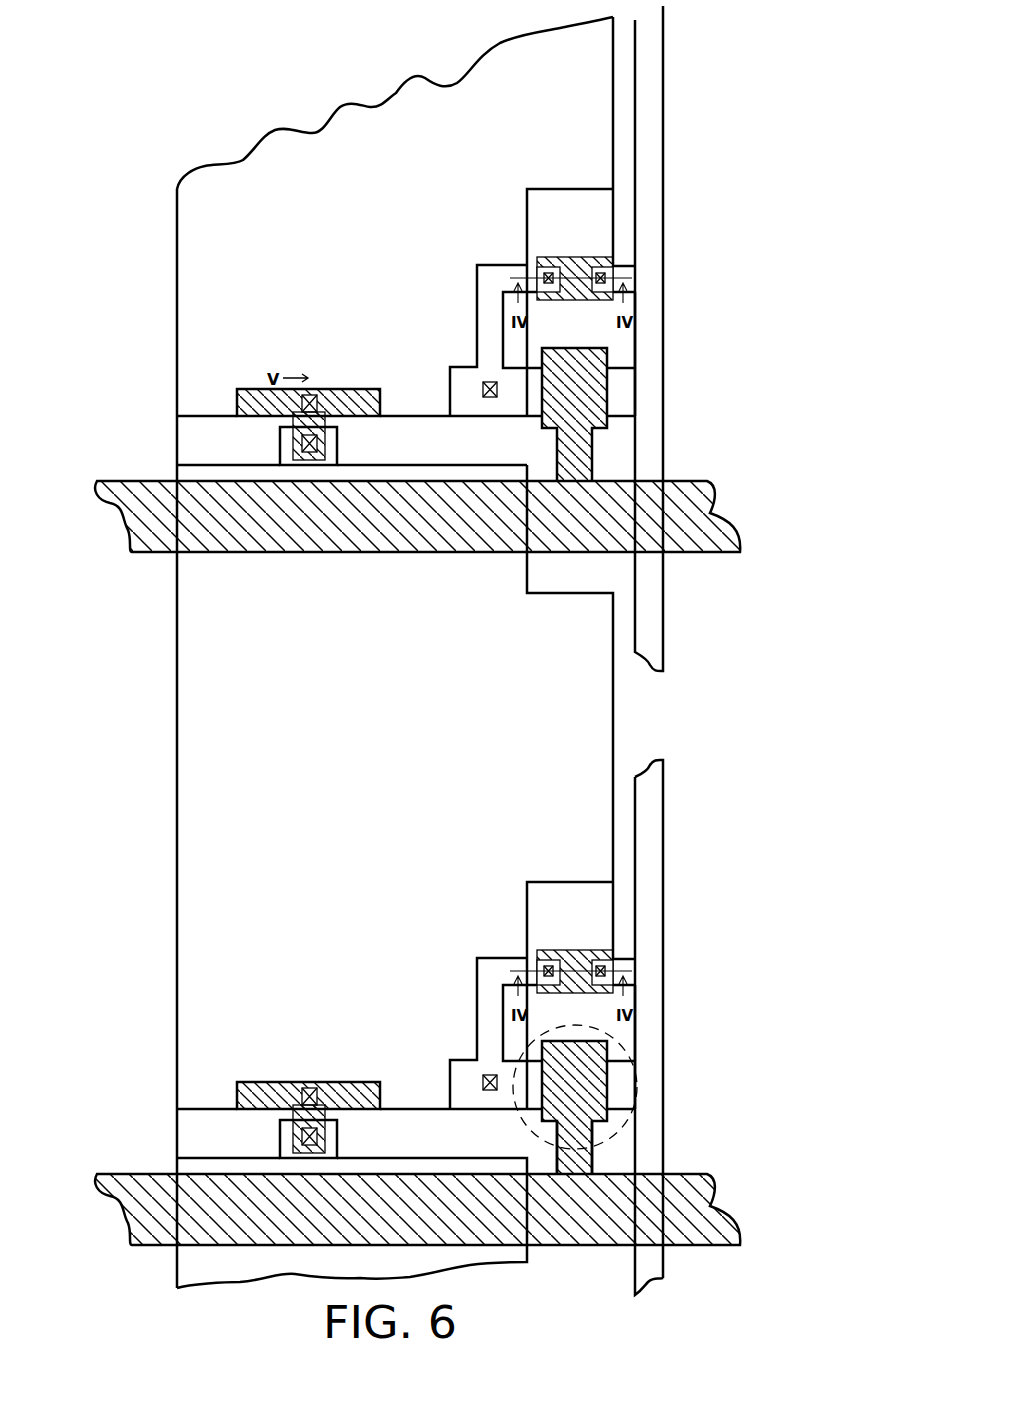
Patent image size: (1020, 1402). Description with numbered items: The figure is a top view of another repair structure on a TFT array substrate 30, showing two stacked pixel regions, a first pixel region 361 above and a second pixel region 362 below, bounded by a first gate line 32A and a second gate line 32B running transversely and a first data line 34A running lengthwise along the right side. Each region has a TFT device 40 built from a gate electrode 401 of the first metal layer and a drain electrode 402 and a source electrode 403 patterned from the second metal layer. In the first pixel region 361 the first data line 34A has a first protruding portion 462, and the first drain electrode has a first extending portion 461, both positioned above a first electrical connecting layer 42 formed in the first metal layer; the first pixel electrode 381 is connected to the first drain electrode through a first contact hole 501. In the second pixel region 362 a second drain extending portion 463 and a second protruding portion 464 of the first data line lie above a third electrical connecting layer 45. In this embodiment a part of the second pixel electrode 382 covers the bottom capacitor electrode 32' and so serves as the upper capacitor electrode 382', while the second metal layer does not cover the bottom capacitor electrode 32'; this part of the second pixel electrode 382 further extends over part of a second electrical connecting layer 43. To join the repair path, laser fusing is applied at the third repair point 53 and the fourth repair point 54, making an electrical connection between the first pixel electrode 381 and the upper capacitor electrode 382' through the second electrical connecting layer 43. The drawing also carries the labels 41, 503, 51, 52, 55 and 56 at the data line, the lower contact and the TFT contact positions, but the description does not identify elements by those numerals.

The TFT array substrate 30 is at (167, 160).
The bottom capacitor electrode 32' is at (138, 474).
The first gate line 32A is at (700, 520).
The second gate line 32B is at (700, 1213).
The first data line 34A is at (647, 1263).
The first pixel region 361 is at (565, 100).
The second pixel region 362 is at (565, 632).
The first pixel electrode 381 is at (395, 194).
The second pixel electrode 382 is at (406, 920).
The upper capacitor electrode 382' is at (318, 423).
The TFT device 40 is at (637, 1093).
The gate electrode 401 is at (572, 1092).
The drain electrode 402 is at (545, 1088).
The source electrode 403 is at (598, 1093).
The data line 41 is at (652, 730).
The first electrical connecting layer 42 is at (573, 258).
The second electrical connecting layer 43 is at (365, 390).
The third electrical connecting layer 45 is at (573, 950).
The first extending portion of the first drain electrode 461 is at (503, 277).
The first protruding portion of the first data line 462 is at (621, 262).
The second drain extending portion 463 is at (503, 970).
The second protruding portion of the first data line 464 is at (621, 955).
The first contact hole 501 is at (487, 383).
The second contact hole 503 is at (487, 1076).
The contact window 51 is at (549, 292).
The contact window 52 is at (600, 292).
The third repair point 53 is at (313, 390).
The fourth repair point 54 is at (280, 448).
The contact window 55 is at (549, 985).
The contact window 56 is at (600, 985).